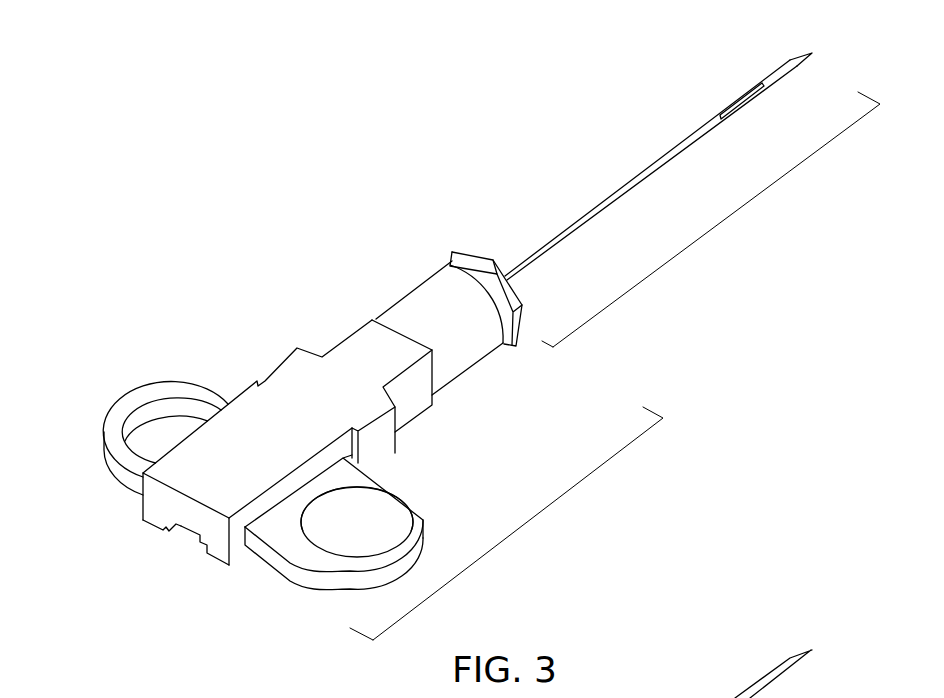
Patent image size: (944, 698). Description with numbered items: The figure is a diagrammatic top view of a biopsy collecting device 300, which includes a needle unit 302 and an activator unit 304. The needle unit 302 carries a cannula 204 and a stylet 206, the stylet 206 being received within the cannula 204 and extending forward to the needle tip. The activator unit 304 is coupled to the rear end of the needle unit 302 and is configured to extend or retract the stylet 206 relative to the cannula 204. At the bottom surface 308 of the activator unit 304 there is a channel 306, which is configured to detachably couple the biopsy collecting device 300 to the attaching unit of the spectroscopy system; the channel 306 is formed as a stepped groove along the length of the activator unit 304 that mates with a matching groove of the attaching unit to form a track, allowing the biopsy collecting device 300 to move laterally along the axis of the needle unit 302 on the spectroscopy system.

The biopsy collecting device 300 is at (158, 84).
The cannula 204 is at (595, 203).
The stylet 206 is at (780, 68).
The needle unit 302 is at (698, 238).
The activator unit 304 is at (575, 488).
The channel 306 is at (185, 566).
The bottom surface 308 is at (156, 531).